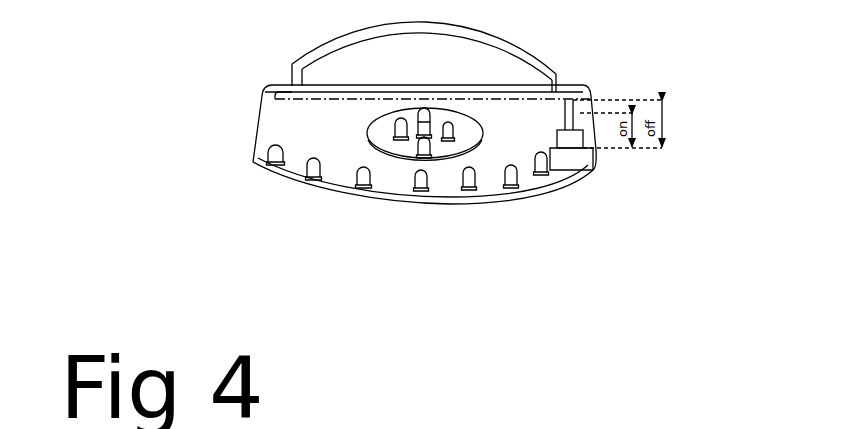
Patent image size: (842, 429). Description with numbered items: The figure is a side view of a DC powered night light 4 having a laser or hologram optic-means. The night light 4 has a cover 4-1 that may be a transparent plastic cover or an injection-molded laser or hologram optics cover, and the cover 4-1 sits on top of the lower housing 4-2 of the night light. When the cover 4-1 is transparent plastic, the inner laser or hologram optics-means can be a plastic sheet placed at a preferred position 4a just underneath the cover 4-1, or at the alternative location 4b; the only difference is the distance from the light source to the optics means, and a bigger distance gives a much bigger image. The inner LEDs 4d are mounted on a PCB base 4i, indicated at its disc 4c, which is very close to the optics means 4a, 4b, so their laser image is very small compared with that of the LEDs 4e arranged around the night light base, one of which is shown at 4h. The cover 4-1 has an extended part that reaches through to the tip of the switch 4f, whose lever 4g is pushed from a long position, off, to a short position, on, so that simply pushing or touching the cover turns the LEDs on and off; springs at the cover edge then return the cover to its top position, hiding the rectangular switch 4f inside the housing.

The night light 4 is at (531, 209).
The cover 4-1 is at (505, 32).
The lower housing 4-2 is at (583, 186).
The optics-means position 4a is at (291, 65).
The optics-means location 4b is at (503, 98).
The central disc 4c is at (392, 120).
The inner LEDs 4d is at (446, 121).
The LEDs 4e is at (283, 178).
The switch 4f is at (562, 153).
The switch lever 4g is at (578, 103).
The button 4h is at (548, 170).
The PCB base 4i is at (360, 140).